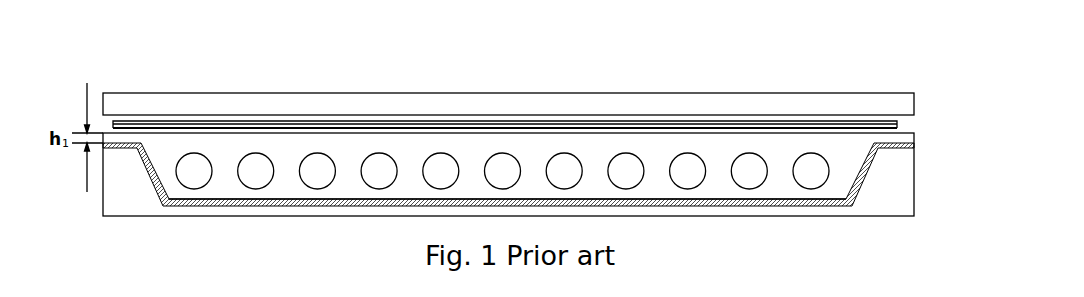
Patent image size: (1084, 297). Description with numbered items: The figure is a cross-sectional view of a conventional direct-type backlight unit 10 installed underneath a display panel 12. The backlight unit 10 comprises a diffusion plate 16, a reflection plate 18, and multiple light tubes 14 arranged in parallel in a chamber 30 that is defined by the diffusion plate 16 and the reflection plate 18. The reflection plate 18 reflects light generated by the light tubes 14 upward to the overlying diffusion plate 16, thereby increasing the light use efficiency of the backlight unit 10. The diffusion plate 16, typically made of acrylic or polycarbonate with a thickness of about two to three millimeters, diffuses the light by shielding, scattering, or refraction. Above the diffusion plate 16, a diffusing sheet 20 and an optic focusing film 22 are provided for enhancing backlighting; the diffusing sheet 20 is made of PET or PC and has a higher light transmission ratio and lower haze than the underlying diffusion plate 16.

The backlight unit 10 is at (520, 148).
The display panel 12 is at (128, 105).
The light tubes 14 is at (502, 173).
The diffusion plate 16 is at (406, 138).
The reflection plate 18 is at (173, 207).
The diffusing sheet 20 is at (304, 130).
The optic focusing film 22 is at (214, 126).
The chamber 30 is at (403, 189).